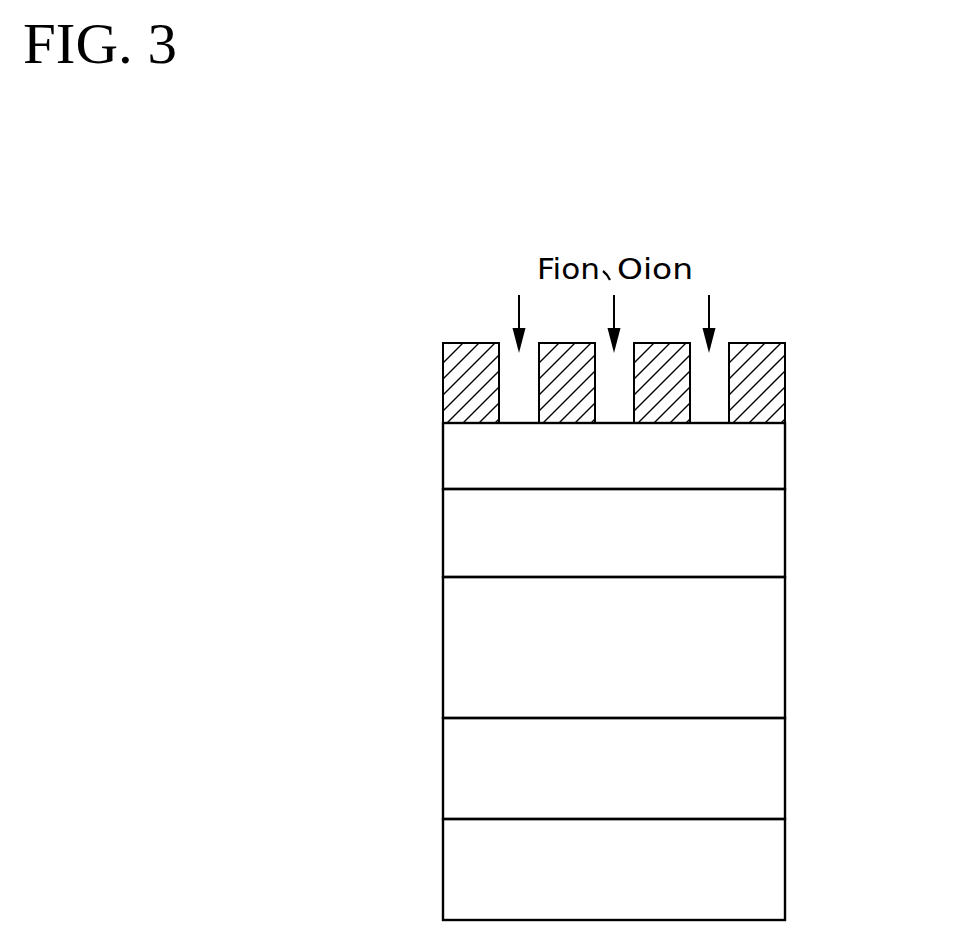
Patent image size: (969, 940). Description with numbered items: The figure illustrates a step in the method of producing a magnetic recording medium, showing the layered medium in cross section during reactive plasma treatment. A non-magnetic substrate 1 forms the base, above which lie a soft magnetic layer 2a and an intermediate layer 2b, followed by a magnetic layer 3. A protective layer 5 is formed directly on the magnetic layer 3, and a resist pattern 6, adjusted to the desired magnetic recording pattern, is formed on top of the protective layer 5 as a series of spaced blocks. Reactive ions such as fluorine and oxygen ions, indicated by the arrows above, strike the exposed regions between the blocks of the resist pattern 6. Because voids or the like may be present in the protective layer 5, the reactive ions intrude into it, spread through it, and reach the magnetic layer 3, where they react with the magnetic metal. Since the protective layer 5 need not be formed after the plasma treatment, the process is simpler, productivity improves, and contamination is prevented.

The non-magnetic substrate 1 is at (773, 868).
The soft magnetic layer 2a is at (773, 773).
The intermediate layer 2b is at (773, 648).
The magnetic layer 3 is at (773, 532).
The protective layer 5 is at (773, 458).
The resist pattern 6 is at (773, 386).